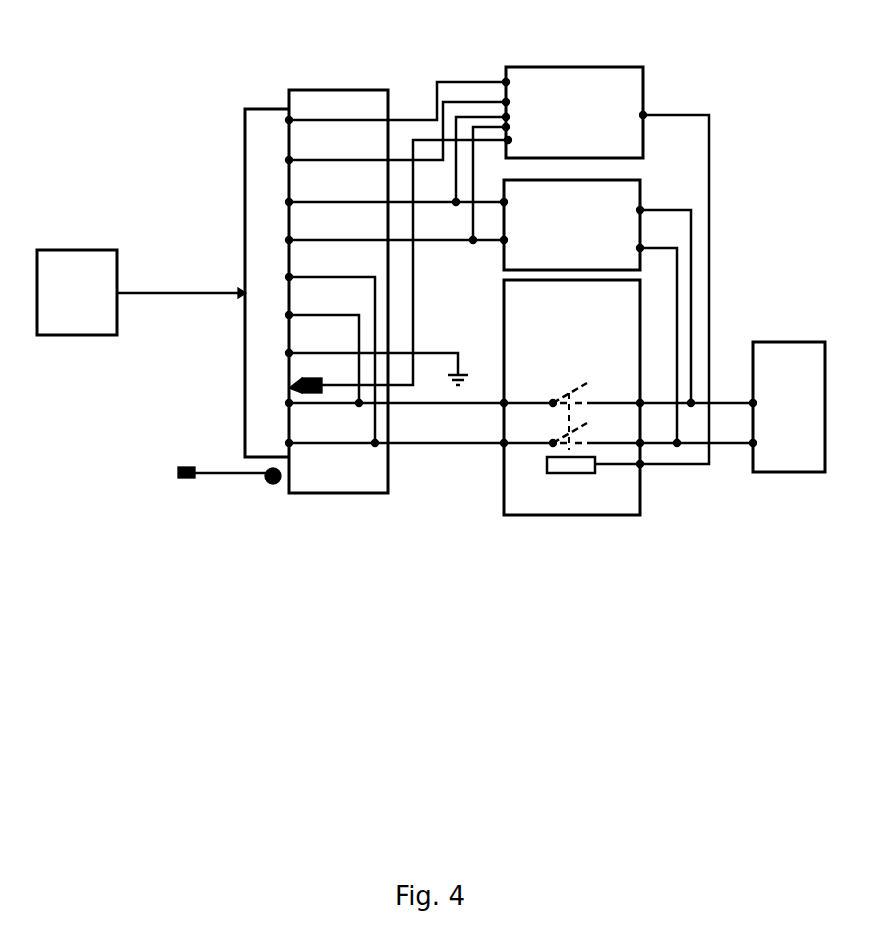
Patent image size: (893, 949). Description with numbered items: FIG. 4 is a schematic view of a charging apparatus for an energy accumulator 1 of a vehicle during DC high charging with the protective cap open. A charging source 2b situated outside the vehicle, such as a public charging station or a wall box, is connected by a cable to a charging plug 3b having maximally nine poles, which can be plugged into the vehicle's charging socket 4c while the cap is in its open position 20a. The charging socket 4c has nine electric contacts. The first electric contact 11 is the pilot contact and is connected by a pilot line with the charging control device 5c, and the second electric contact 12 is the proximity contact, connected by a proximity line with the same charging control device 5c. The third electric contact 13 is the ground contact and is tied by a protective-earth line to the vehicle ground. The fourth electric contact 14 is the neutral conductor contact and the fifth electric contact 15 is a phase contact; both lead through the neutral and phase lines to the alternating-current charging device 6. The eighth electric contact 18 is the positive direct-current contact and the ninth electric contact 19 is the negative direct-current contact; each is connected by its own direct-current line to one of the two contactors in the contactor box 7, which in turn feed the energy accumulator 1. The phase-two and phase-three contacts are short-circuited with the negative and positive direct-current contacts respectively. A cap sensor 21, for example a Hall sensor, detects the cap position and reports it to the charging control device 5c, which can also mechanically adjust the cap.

The energy accumulator 1 is at (789, 407).
The charging source 2b is at (141, 292).
The charging plug 3b is at (245, 109).
The charging socket 4c is at (325, 90).
The charging control device 5c is at (607, 267).
The charging device 6 is at (597, 311).
The contactor box 7 is at (572, 397).
The first electric contact 11 is at (289, 120).
The second electric contact 12 is at (289, 160).
The third electric contact 13 is at (289, 353).
The fourth electric contact 14 is at (289, 202).
The fifth electric contact 15 is at (289, 240).
The eighth electric contact 18 is at (289, 403).
The ninth electric contact 19 is at (289, 443).
The open position of protective cap 20a is at (265, 478).
The cap sensor 21 is at (289, 388).